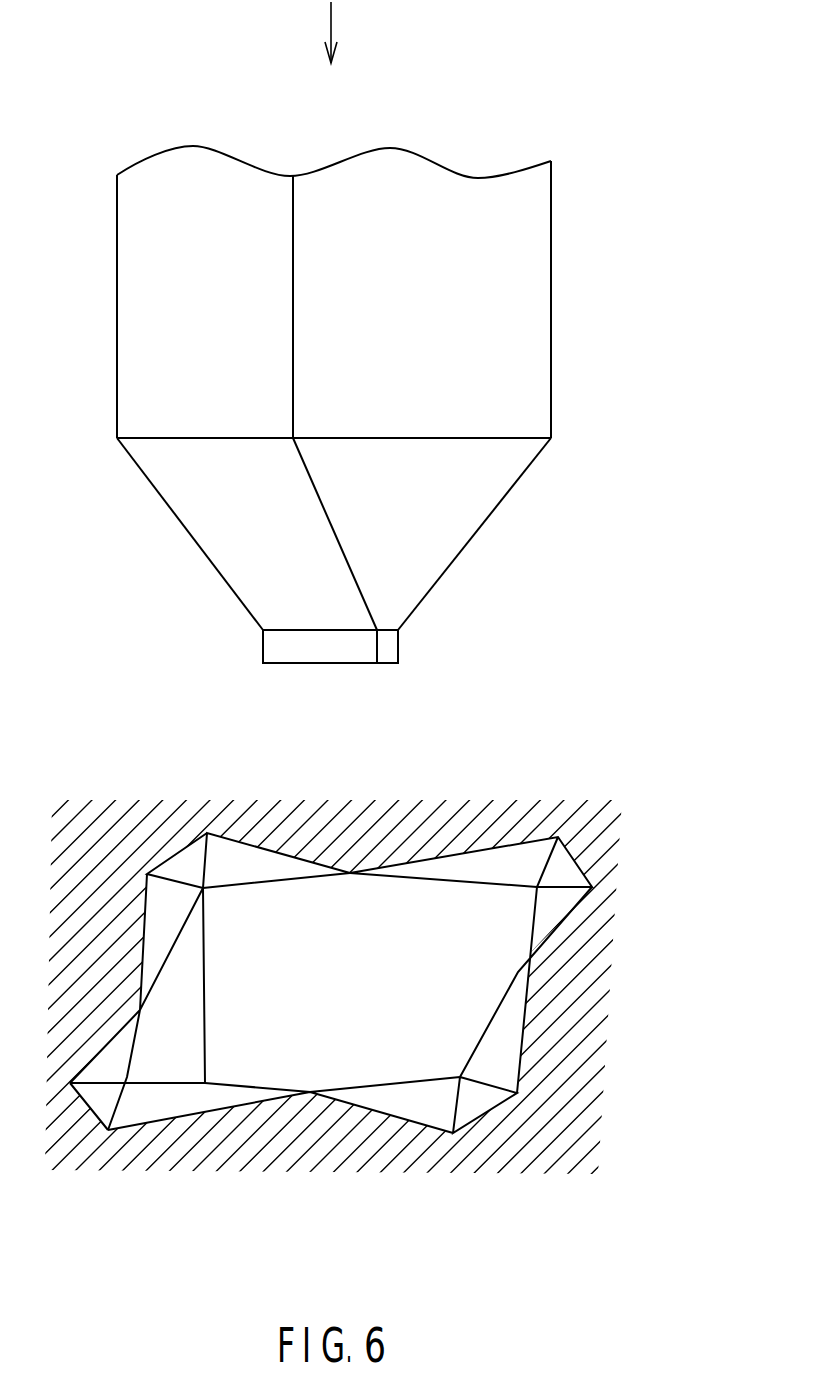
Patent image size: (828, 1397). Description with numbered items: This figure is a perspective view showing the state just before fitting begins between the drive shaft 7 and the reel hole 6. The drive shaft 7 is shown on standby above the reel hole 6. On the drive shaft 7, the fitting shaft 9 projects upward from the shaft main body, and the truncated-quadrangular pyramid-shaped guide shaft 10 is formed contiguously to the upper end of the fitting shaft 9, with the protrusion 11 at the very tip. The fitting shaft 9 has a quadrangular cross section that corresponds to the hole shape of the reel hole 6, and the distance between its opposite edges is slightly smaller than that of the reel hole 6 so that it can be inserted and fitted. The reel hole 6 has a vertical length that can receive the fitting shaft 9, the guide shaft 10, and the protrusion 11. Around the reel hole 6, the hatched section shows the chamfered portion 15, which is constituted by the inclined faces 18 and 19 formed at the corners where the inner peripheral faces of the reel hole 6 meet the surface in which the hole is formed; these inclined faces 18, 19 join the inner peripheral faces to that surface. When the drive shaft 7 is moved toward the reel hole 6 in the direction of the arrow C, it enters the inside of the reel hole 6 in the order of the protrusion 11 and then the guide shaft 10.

The arrow direction C is at (331, 31).
The drive shaft 7 is at (399, 434).
The fitting shaft 9 is at (517, 271).
The guide shaft 10 is at (478, 522).
The protrusion 11 is at (317, 652).
The reel hole 6 is at (331, 994).
The chamfered portion 15 is at (558, 923).
The inclined face 18 is at (227, 870).
The inclined face 19 is at (467, 850).